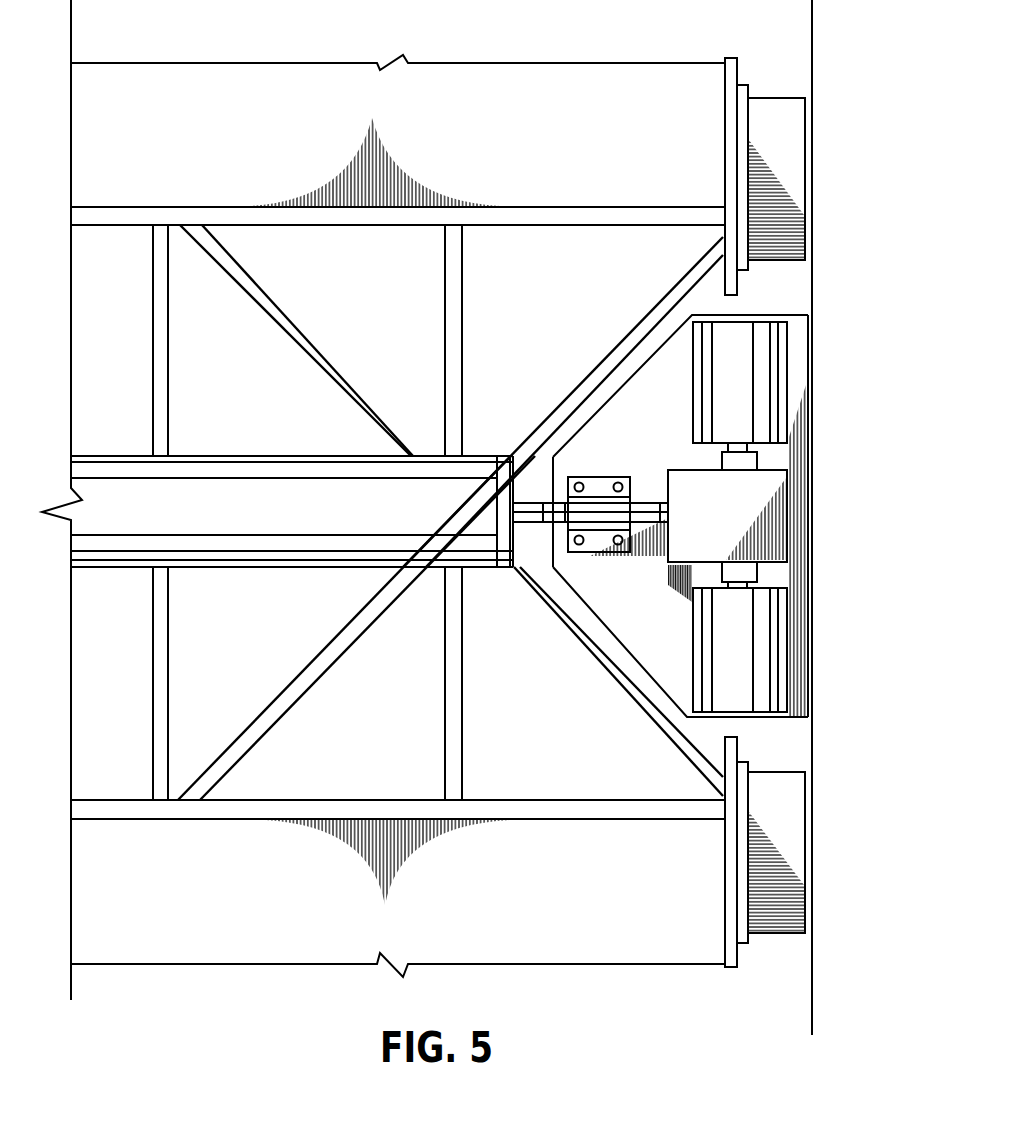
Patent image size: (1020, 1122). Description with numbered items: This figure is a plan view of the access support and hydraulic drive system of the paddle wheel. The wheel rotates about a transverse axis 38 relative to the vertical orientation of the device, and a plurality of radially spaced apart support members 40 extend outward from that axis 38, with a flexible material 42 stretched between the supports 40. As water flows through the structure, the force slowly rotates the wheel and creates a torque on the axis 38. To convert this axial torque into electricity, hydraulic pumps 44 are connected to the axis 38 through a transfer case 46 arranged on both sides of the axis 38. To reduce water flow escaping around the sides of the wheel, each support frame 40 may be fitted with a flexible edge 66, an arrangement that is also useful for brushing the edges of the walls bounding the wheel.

The axis 38 is at (340, 522).
The support members 40 is at (730, 282).
The flexible material 42 is at (340, 107).
The hydraulic pumps 44 is at (753, 623).
The transfer case 46 is at (720, 526).
The flexible edge 66 is at (787, 166).